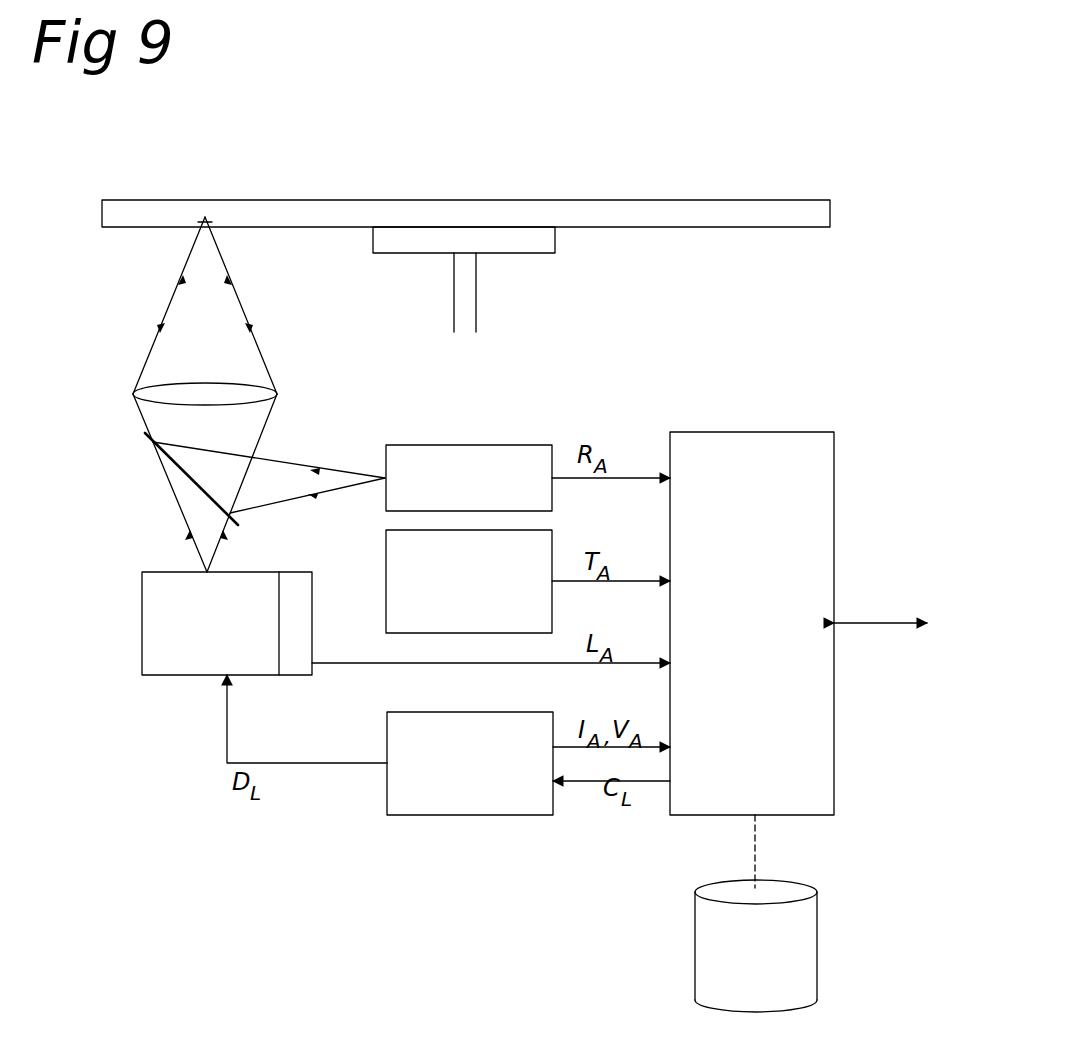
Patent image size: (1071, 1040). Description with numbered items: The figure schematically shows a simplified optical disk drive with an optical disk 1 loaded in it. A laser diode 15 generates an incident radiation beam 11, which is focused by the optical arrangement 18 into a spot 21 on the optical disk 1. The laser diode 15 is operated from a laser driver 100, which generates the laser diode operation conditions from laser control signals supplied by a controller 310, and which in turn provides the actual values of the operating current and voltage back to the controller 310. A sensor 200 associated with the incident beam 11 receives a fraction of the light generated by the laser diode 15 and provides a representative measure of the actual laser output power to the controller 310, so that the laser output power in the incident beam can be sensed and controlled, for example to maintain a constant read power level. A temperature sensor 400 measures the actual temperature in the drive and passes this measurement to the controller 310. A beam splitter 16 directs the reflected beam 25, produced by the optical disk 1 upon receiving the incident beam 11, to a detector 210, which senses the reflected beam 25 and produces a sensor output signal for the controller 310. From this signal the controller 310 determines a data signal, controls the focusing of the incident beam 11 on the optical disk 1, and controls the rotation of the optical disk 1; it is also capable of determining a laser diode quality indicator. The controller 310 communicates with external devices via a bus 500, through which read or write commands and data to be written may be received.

The optical disk 1 is at (705, 214).
The spot 21 is at (205, 218).
The radiation beam 11 is at (196, 513).
The optical arrangement 18 is at (168, 392).
The beam splitter 16 is at (152, 440).
The reflected beam 25 is at (313, 470).
The laser diode 15 is at (158, 618).
The sensor 200 is at (297, 677).
The detector 210 is at (490, 466).
The temperature sensor 400 is at (406, 574).
The laser driver 100 is at (482, 800).
The controller 310 is at (794, 448).
The bus 500 is at (880, 624).